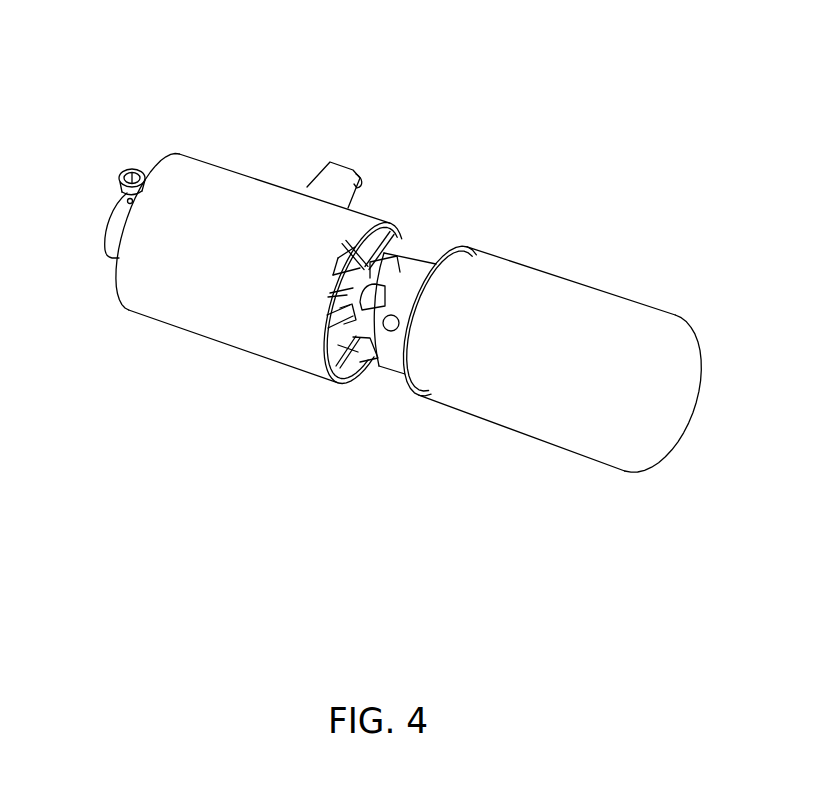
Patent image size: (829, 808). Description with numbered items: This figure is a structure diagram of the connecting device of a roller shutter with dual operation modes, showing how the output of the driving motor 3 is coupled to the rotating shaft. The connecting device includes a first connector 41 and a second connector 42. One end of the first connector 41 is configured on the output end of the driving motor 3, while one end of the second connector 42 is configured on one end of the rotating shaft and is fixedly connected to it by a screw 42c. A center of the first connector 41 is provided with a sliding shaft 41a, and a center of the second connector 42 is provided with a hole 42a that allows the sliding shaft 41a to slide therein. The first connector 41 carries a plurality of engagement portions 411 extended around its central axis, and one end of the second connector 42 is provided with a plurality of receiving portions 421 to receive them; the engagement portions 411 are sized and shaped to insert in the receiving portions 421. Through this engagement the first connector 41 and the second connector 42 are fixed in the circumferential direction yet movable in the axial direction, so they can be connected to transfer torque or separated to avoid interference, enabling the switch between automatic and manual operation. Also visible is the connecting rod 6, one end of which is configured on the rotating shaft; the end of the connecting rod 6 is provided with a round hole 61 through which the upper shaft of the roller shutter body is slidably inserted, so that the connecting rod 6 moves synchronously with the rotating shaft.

The driving motor 3 is at (545, 403).
The connecting rod 6 is at (323, 175).
The round hole 61 is at (355, 178).
The first connector 41 is at (392, 353).
The sliding shaft 41a is at (372, 298).
The engagement portions 411 is at (408, 252).
The second connector 42 is at (222, 317).
The hole 42a is at (352, 307).
The screw 42c is at (128, 168).
The receiving portions 421 is at (380, 245).